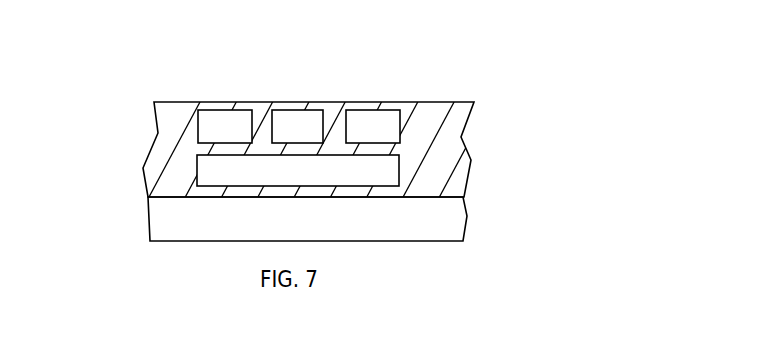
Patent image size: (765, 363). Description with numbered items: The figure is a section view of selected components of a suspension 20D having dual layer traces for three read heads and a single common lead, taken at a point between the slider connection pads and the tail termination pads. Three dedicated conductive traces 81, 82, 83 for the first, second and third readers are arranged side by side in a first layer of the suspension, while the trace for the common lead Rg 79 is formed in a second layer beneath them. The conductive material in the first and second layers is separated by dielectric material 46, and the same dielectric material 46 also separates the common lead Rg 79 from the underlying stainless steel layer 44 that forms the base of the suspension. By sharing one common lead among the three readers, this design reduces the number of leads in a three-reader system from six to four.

The suspension 20D is at (134, 109).
The stainless steel layer 44 is at (430, 230).
The dielectric material 46 is at (458, 127).
The common lead Rg 79 is at (394, 166).
The dedicated conductive trace for reader R1 81 is at (210, 114).
The dedicated conductive trace for reader R2 82 is at (285, 113).
The dedicated conductive trace for reader R3 83 is at (359, 113).